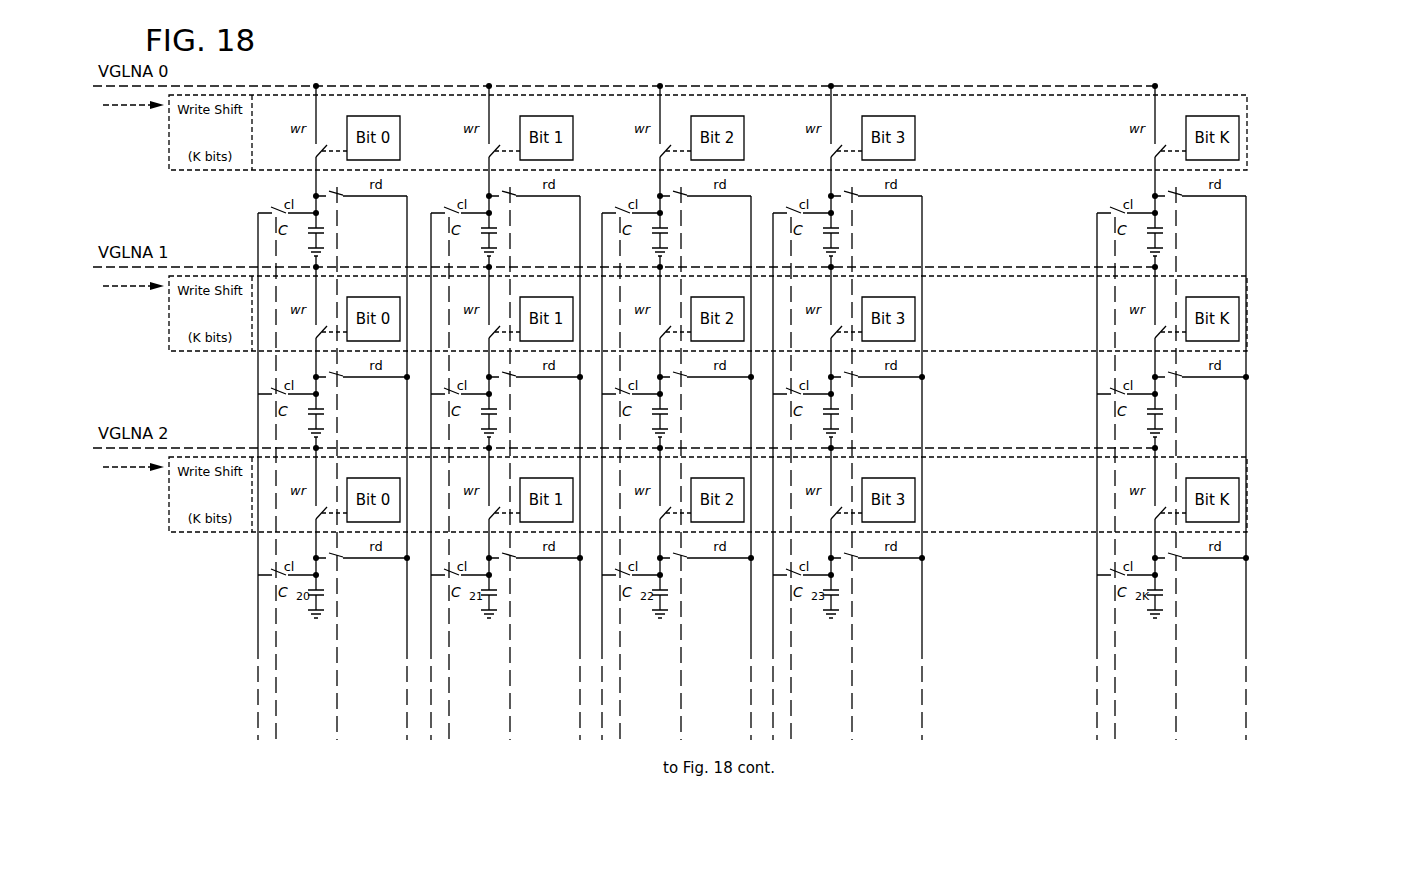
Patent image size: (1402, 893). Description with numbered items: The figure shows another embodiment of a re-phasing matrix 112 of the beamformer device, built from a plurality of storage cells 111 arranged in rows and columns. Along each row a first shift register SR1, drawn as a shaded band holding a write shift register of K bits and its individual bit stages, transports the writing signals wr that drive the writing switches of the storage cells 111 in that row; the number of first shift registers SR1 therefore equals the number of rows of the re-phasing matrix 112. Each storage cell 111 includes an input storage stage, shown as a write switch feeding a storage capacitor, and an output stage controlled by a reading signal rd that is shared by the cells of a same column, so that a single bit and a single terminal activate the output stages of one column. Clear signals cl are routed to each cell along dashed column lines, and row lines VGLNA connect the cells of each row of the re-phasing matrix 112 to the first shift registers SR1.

The first shift register SR1 is at (1252, 127).
The re-phasing matrix 112 is at (1284, 222).
The storage cell 111 is at (1228, 425).